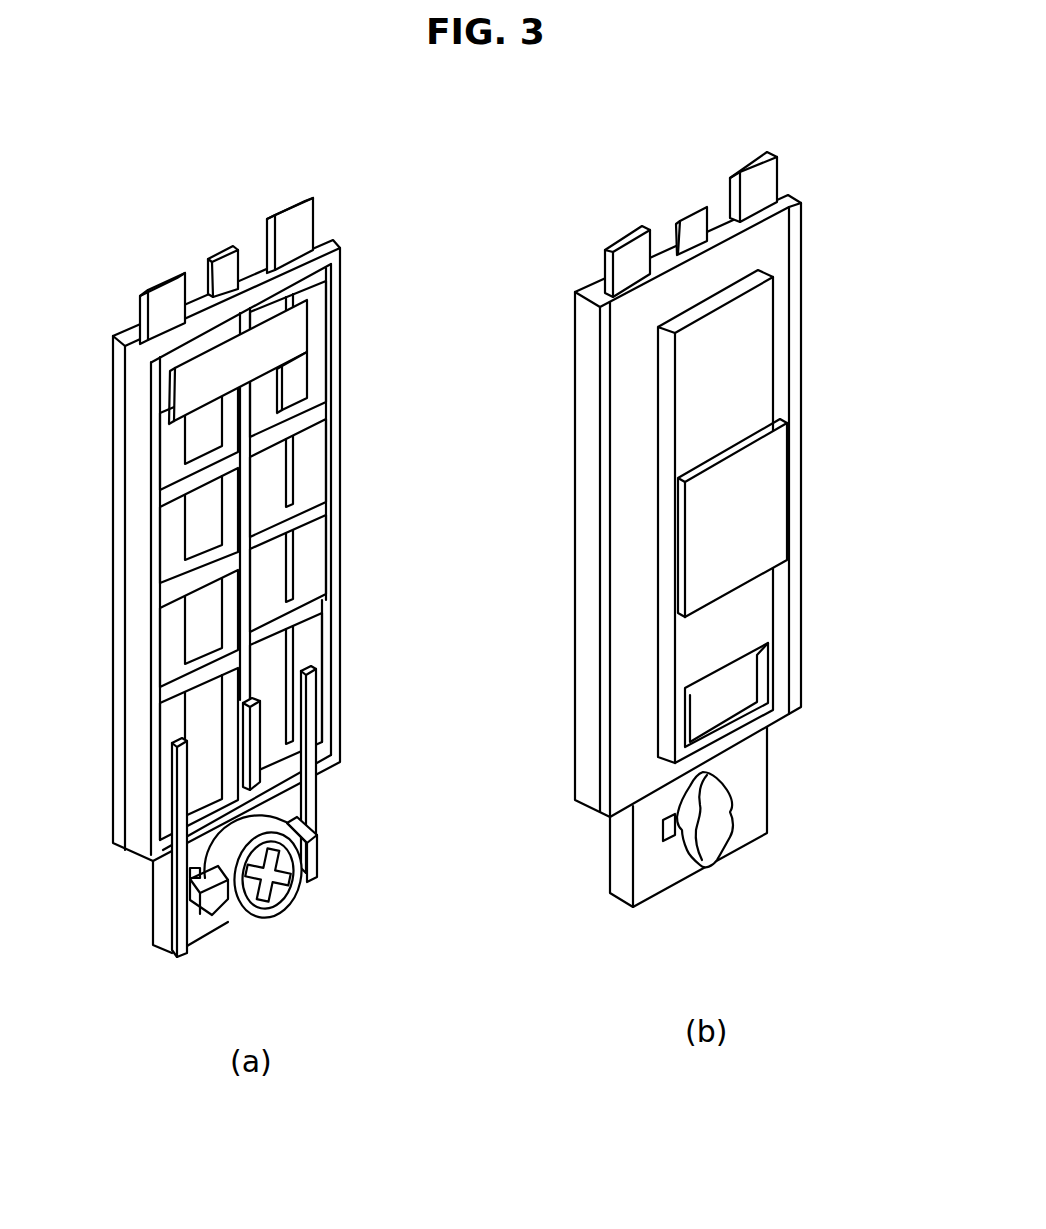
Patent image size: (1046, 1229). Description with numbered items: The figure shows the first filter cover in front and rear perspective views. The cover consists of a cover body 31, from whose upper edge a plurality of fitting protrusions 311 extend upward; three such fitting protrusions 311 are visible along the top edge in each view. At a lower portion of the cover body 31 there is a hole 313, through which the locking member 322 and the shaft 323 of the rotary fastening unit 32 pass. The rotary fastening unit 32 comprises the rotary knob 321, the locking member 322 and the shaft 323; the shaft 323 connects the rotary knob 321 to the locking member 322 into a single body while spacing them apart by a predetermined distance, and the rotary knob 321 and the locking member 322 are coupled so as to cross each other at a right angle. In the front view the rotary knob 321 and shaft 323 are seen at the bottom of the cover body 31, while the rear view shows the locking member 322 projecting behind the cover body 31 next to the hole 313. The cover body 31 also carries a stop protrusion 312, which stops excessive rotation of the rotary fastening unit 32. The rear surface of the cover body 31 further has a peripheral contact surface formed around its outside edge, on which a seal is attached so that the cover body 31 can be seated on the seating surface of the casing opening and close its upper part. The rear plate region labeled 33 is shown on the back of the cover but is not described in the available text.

The cover body 31 is at (303, 467).
The fitting protrusion 311 is at (160, 308).
The stop protrusion 312 is at (197, 876).
The hole 313 is at (663, 838).
The rotary fastening unit 32 is at (336, 831).
The rotary knob 321 is at (282, 903).
The locking member 322 is at (720, 817).
The shaft 323 is at (233, 902).
The rear plate 33 is at (790, 567).